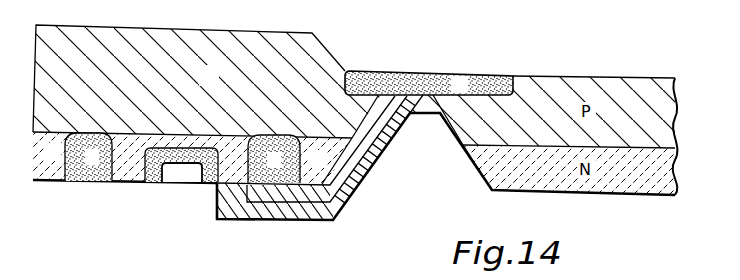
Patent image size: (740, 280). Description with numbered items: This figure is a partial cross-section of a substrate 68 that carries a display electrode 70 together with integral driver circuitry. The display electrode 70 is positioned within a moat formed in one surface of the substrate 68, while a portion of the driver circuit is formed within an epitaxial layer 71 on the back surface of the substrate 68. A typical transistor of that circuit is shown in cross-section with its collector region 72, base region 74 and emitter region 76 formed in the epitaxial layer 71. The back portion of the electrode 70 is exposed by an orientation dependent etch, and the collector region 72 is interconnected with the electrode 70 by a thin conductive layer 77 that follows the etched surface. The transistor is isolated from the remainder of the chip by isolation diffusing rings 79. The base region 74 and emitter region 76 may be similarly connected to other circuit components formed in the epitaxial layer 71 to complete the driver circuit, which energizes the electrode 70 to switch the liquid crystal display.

The substrate 68 is at (40, 58).
The display electrode 70 is at (436, 72).
The epitaxial layer 71 is at (38, 183).
The collector region 72 is at (129, 185).
The base region 74 is at (151, 184).
The emitter region 76 is at (188, 183).
The thin conductive layer 77 is at (302, 221).
The isolation diffusing rings 79 is at (85, 184).